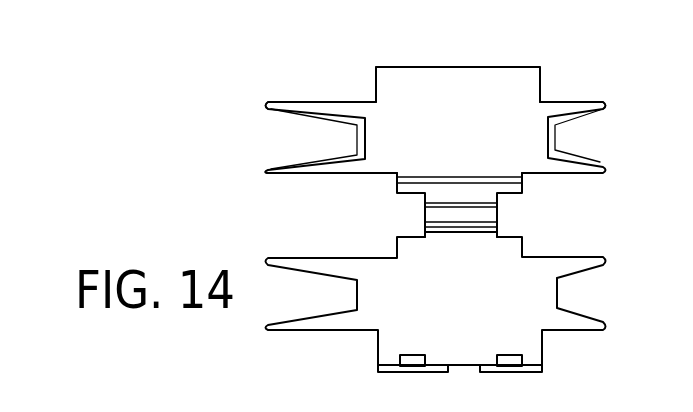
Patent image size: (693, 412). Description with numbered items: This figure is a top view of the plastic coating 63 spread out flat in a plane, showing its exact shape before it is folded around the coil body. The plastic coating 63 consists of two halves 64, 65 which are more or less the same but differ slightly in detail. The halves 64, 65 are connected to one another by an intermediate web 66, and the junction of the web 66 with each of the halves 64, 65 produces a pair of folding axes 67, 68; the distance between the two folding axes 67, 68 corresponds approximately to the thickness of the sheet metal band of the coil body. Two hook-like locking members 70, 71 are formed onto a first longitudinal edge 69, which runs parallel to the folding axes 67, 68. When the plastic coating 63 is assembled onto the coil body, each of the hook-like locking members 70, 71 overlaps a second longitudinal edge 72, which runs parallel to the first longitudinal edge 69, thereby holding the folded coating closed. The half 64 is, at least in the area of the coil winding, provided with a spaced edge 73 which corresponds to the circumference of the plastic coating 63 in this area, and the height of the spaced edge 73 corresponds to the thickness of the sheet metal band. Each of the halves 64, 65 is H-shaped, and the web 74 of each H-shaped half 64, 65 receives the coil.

The plastic coating 63 is at (313, 176).
The half of the plastic coating 64 is at (518, 73).
The half of the plastic coating 65 is at (399, 332).
The intermediate web 66 is at (490, 217).
The folding axis 67 is at (446, 196).
The folding axis 68 is at (478, 233).
The first longitudinal edge 69 is at (470, 367).
The hook-like locking member 70 is at (415, 362).
The hook-like locking member 71 is at (515, 366).
The second longitudinal edge 72 is at (404, 66).
The spaced edge 73 is at (309, 115).
The web 74 is at (453, 92).